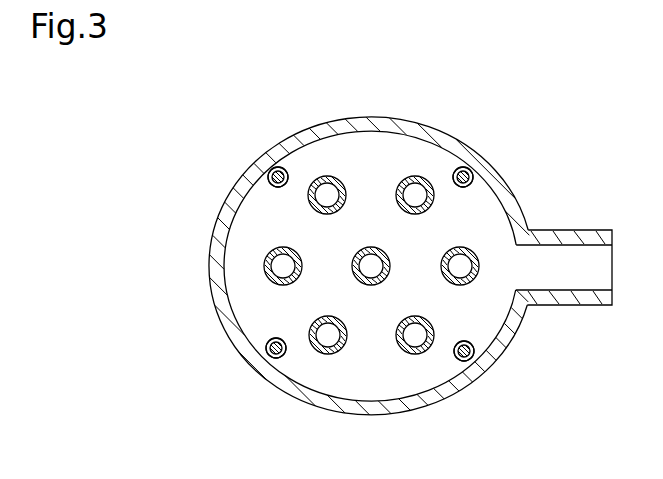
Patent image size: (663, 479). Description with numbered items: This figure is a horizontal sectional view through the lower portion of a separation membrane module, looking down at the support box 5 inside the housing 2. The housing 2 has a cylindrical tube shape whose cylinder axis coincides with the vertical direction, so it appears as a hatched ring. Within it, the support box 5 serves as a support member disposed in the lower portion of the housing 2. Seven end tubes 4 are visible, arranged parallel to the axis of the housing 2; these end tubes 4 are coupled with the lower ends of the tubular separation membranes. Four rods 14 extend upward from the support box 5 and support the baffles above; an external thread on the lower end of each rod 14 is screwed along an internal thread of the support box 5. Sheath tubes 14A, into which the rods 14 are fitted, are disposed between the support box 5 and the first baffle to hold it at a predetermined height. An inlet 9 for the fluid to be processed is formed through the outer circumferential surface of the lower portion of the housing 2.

The housing 2 is at (218, 322).
The end tubes 4 is at (325, 197).
The support box 5 is at (367, 152).
The inlet 9 is at (562, 300).
The rods 14 is at (268, 177).
The sheath tubes 14A is at (283, 168).